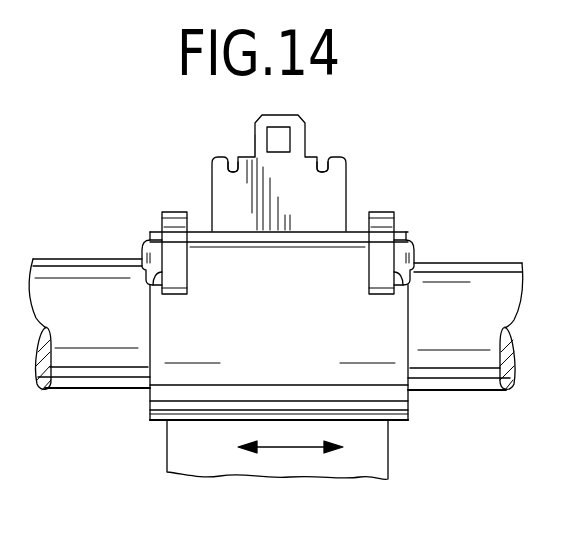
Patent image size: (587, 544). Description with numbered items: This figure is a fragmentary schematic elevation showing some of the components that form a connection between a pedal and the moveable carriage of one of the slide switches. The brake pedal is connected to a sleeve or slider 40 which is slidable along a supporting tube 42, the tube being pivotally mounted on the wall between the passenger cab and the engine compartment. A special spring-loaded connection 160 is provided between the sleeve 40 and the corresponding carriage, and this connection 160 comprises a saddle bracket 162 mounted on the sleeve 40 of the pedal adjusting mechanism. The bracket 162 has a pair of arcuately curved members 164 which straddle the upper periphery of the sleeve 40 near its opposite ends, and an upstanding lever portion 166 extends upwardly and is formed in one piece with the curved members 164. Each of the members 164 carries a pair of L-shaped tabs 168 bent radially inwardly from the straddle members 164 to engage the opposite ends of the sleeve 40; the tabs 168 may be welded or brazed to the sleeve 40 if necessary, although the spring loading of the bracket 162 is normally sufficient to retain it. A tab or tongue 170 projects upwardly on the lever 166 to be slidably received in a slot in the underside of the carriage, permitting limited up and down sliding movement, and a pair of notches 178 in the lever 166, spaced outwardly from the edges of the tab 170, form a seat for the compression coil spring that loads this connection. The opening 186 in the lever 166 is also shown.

The sleeve 40 is at (378, 406).
The supporting tube 42 is at (460, 263).
The spring-loaded connection 160 is at (187, 183).
The saddle bracket 162 is at (308, 156).
The curved members 164 is at (380, 258).
The lever portion 166 is at (327, 197).
The L-shaped tabs 168 is at (142, 262).
The tab 170 is at (256, 137).
The notches 178 is at (233, 170).
The aperture 186 is at (278, 127).